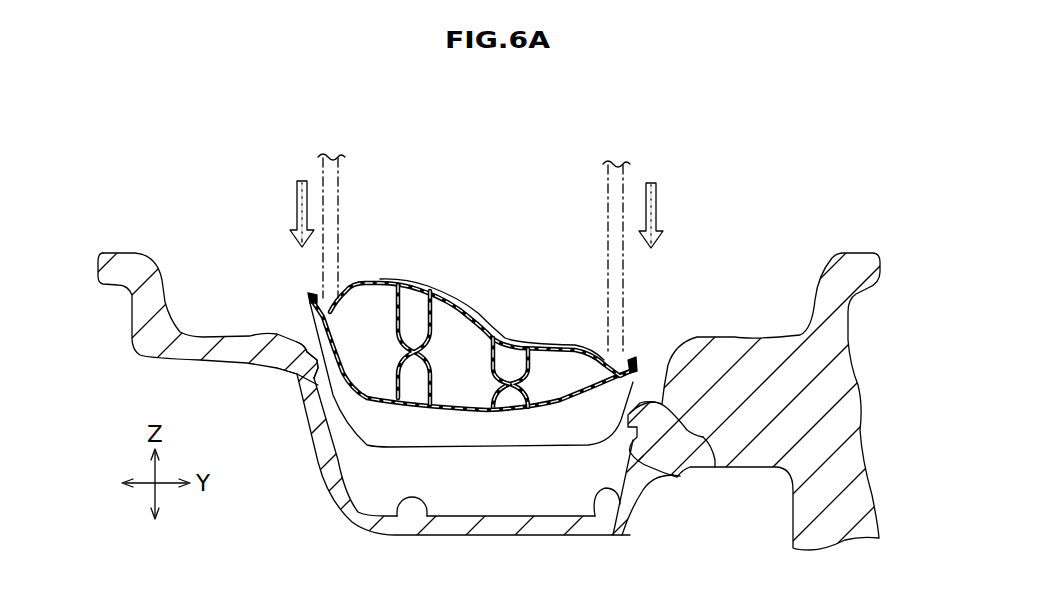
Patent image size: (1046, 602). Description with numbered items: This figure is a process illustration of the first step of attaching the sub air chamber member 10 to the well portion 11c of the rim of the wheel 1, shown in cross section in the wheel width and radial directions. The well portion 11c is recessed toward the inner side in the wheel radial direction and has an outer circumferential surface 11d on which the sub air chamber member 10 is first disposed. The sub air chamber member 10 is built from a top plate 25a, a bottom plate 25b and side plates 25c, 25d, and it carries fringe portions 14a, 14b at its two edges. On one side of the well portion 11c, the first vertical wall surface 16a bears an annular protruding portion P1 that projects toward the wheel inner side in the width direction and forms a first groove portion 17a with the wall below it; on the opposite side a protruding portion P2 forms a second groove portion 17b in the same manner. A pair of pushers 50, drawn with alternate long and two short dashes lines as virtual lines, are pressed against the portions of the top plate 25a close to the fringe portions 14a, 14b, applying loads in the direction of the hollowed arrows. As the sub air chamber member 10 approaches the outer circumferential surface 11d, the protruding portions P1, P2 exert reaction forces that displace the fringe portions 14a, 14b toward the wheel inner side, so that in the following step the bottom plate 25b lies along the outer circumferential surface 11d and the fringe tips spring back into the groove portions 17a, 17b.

The vehicle wheel 1 is at (857, 337).
The sub air chamber member 10 is at (474, 300).
The well portion 11c is at (485, 490).
The outer circumferential surface 11d is at (402, 513).
The fringe portion 14a is at (637, 363).
The fringe portion 14b is at (313, 295).
The first vertical wall surface 16a is at (602, 515).
The first groove portion 17a is at (667, 468).
The second groove portion 17b is at (316, 384).
The top plate 25a is at (372, 287).
The bottom plate 25b is at (520, 450).
The side plate 25c is at (663, 373).
The side plate 25d is at (310, 438).
The pusher 50 is at (340, 171).
The protruding portion P1 is at (700, 430).
The protruding portion P2 is at (310, 346).